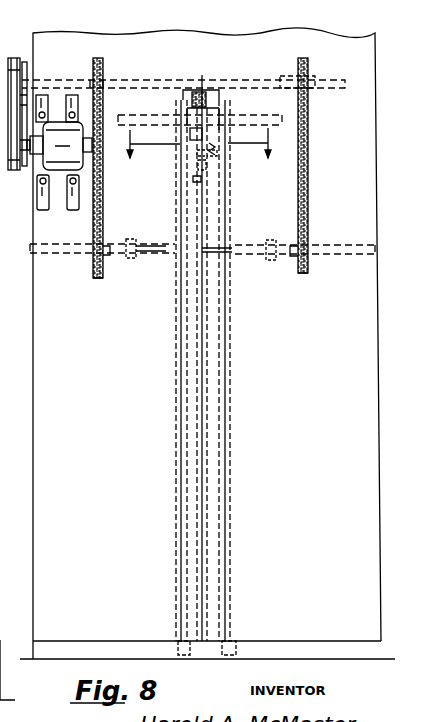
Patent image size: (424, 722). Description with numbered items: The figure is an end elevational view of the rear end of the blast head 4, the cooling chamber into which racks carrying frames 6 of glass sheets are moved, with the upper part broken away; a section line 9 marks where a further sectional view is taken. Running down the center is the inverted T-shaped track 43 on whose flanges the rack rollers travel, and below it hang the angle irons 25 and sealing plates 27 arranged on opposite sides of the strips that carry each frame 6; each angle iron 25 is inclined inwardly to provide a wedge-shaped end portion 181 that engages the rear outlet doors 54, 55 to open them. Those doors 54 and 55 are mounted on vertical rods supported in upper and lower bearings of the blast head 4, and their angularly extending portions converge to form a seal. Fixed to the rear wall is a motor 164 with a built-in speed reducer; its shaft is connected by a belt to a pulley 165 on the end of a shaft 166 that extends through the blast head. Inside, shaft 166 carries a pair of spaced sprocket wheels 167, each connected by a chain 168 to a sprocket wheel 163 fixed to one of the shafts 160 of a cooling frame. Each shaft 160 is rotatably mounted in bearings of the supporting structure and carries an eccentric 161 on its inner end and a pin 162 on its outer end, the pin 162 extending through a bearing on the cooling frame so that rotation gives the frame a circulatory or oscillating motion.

The blast head 4 is at (341, 30).
The wedge-shaped end portion 181 is at (204, 0).
The frame 6 is at (208, 416).
The section line 9 is at (197, 137).
The angle iron 25 is at (216, 150).
The plate 27 is at (210, 180).
The inverted T-shaped track 43 is at (203, 78).
The outlet door 54 is at (190, 336).
The outlet door 55 is at (215, 366).
The shaft 160 is at (322, 254).
The eccentric 161 is at (132, 240).
The pin 162 is at (126, 256).
The sprocket wheel 163 is at (104, 268).
The motor 164 is at (62, 178).
The pulley 165 is at (25, 72).
The shaft 166 is at (150, 80).
The sprocket wheel 167 is at (103, 78).
The chain 168 is at (104, 185).